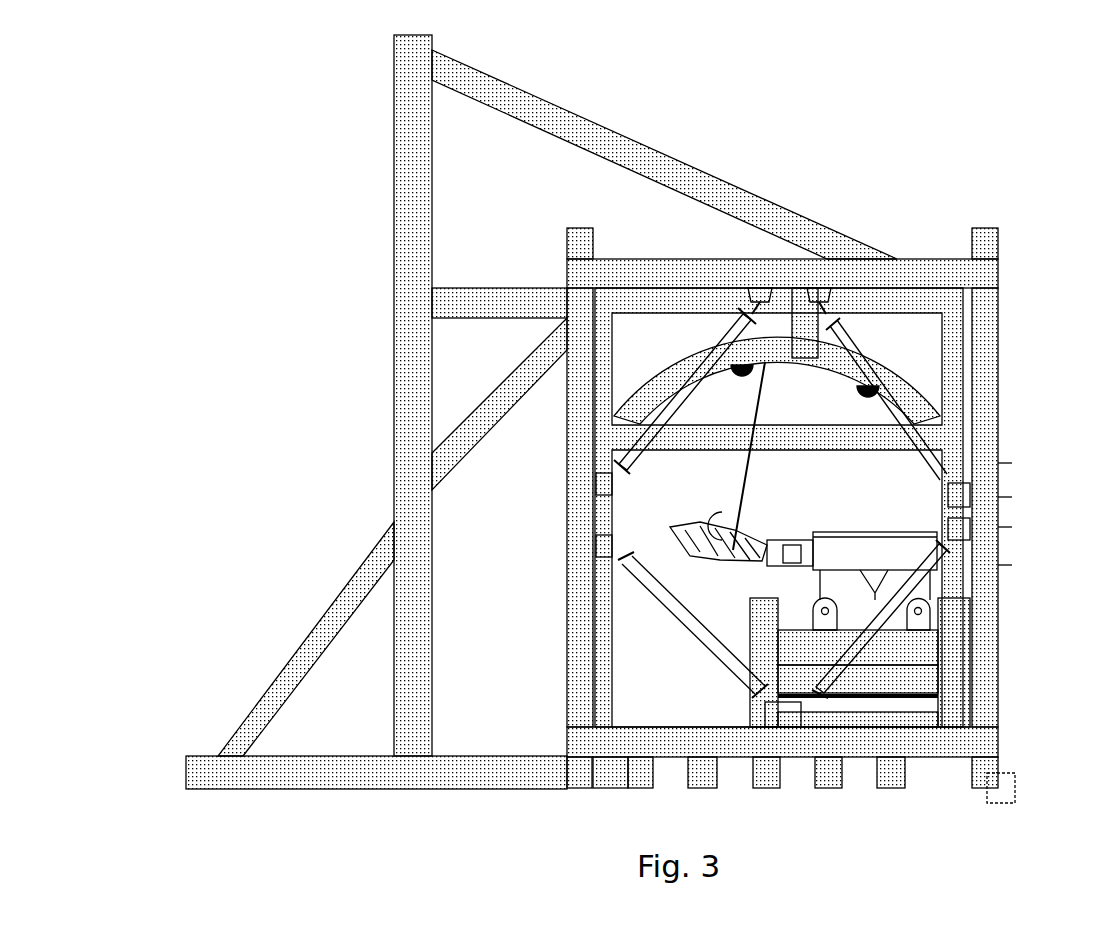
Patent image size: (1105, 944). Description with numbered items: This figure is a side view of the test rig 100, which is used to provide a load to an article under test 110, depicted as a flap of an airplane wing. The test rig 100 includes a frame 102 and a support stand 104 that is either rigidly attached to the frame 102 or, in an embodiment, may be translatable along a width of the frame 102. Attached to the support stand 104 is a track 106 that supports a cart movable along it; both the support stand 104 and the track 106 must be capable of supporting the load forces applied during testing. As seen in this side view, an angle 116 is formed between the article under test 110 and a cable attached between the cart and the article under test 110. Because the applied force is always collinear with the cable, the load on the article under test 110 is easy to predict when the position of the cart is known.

The test rig 100 is at (637, 416).
The frame 102 is at (985, 228).
The support stand 104 is at (648, 145).
The track 106 is at (658, 377).
The article under test 110 is at (672, 527).
The angle 116 is at (733, 527).